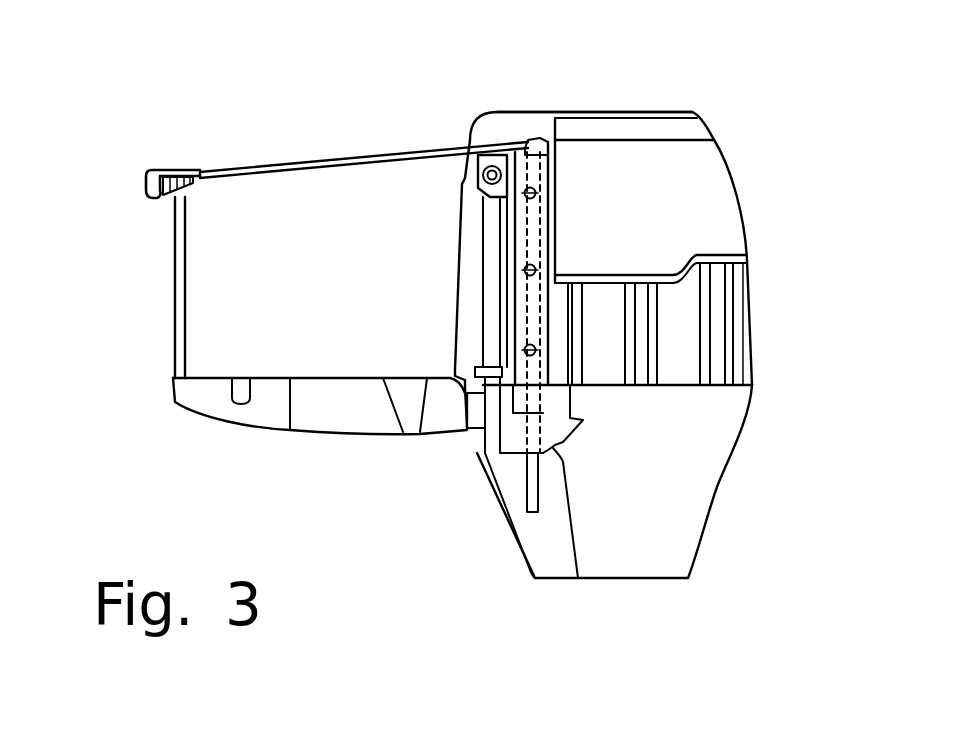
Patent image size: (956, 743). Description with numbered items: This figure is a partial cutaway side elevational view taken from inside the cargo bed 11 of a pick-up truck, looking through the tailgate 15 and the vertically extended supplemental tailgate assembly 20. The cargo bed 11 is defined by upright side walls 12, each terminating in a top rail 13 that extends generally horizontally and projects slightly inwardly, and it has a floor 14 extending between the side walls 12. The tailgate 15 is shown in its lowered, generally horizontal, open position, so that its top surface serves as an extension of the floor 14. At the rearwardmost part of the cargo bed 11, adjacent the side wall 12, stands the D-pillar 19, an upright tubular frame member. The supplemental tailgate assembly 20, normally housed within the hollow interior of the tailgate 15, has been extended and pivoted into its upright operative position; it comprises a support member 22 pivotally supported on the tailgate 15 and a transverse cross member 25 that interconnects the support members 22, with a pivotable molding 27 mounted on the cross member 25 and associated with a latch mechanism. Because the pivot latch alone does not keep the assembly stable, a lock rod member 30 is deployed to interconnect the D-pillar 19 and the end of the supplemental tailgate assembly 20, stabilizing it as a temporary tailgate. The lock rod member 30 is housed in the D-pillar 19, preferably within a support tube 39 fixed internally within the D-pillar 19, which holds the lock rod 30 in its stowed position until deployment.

The cargo bed 11 is at (757, 207).
The side wall 12 is at (718, 217).
The top rail 13 is at (655, 112).
The floor 14 is at (687, 385).
The tailgate 15 is at (335, 430).
The D-pillar 19 is at (543, 240).
The supplemental tailgate assembly 20 is at (165, 144).
The support member 22 is at (173, 310).
The cross member 25 is at (167, 200).
The pivotable molding 27 is at (140, 177).
The lock rod member 30 is at (337, 158).
The support tube 39 is at (522, 230).